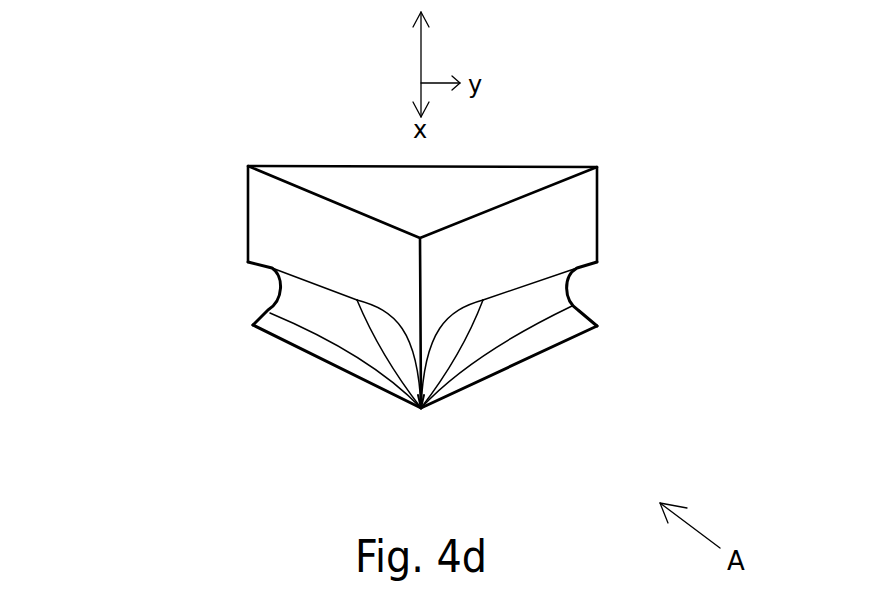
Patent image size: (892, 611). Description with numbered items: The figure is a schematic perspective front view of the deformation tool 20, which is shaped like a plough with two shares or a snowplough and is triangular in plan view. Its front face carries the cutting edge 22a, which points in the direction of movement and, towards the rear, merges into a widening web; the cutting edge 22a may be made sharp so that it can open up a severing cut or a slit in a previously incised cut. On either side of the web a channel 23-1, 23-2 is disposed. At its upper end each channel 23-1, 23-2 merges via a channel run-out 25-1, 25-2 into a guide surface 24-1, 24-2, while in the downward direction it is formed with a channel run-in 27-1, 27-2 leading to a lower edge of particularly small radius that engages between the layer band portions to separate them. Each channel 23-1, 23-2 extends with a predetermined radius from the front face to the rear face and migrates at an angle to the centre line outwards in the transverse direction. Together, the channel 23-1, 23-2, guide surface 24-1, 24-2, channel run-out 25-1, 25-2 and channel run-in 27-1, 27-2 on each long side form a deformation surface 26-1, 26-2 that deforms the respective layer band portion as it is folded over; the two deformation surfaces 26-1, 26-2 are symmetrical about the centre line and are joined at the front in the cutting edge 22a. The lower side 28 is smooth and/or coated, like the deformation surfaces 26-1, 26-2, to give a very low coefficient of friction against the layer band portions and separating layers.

The deformation tool 20 is at (360, 165).
The cutting edge 22a is at (428, 348).
The channel 23-1 is at (571, 290).
The channel 23-2 is at (276, 289).
The guide surface 24-1 is at (540, 283).
The guide surface 24-2 is at (307, 283).
The channel run-out 25-1 is at (590, 270).
The channel run-out 25-2 is at (252, 265).
The deformation surface 26-1 is at (518, 328).
The deformation surface 26-2 is at (333, 333).
The channel run-in 27-1 is at (518, 360).
The channel run-in 27-2 is at (254, 325).
The lower side 28 is at (365, 385).